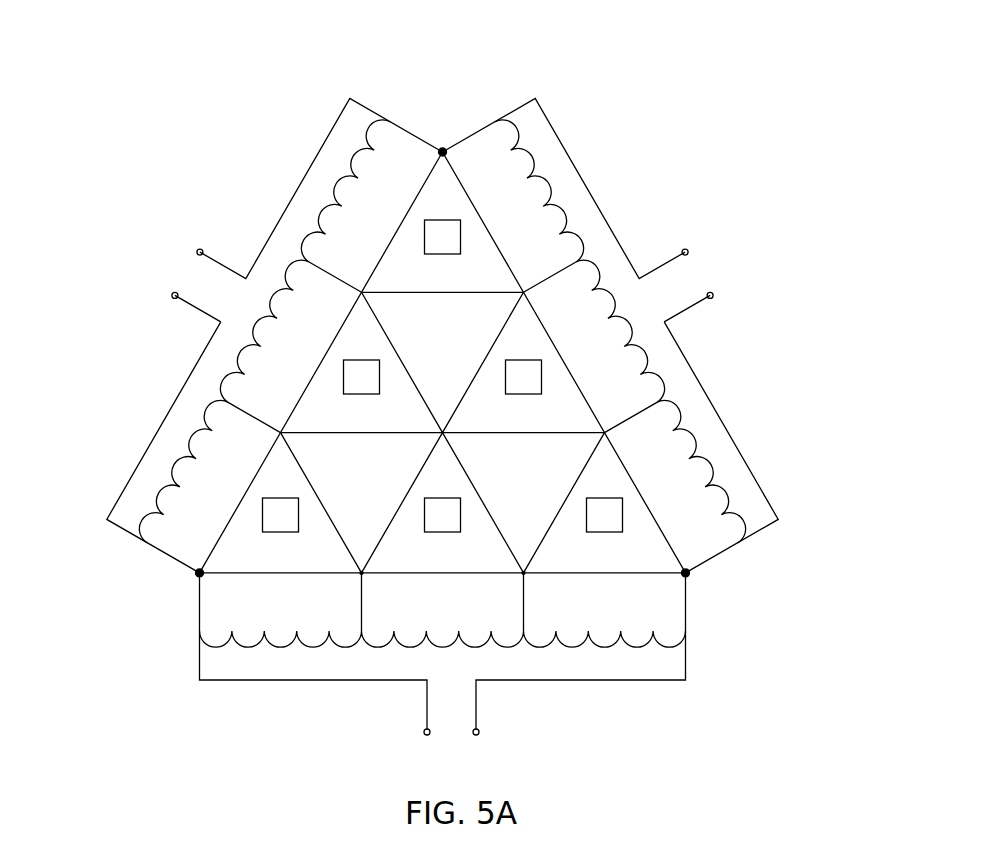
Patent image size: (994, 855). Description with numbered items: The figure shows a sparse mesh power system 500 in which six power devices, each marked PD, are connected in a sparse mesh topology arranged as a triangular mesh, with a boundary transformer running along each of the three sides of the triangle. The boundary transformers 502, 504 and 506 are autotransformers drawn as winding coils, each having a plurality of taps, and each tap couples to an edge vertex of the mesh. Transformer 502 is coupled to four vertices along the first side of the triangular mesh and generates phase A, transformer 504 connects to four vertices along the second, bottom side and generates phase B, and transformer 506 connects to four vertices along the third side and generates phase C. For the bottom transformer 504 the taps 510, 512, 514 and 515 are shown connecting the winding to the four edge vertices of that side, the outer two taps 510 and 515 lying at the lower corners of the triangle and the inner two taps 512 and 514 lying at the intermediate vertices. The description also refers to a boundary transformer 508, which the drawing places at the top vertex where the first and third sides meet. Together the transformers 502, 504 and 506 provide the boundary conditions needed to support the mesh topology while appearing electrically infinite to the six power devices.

The sparse mesh power system 500 is at (628, 38).
The boundary transformer 502 is at (676, 396).
The boundary transformer 504 is at (632, 656).
The boundary transformer 506 is at (329, 194).
The boundary transformer 508 is at (442, 151).
The tap 510 is at (199, 573).
The tap 512 is at (361, 573).
The tap 514 is at (523, 573).
The tap 515 is at (686, 573).